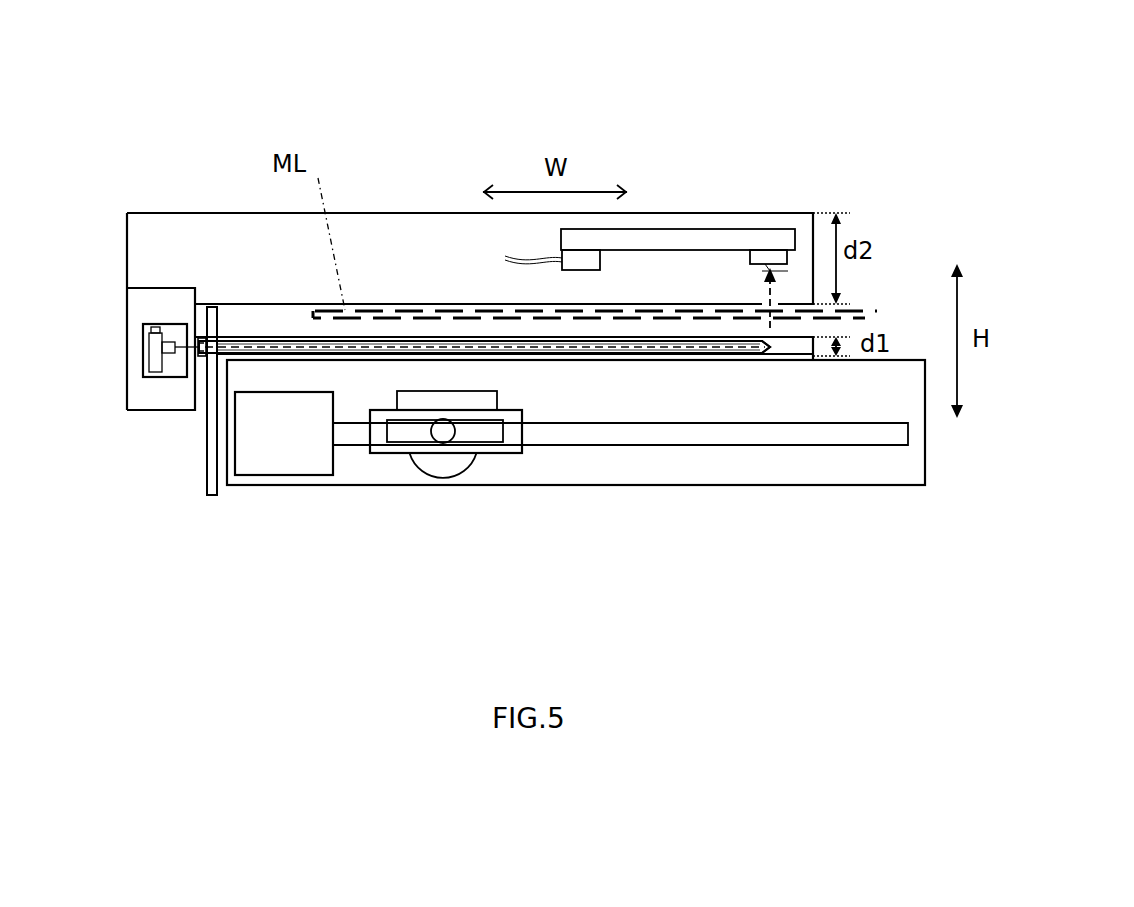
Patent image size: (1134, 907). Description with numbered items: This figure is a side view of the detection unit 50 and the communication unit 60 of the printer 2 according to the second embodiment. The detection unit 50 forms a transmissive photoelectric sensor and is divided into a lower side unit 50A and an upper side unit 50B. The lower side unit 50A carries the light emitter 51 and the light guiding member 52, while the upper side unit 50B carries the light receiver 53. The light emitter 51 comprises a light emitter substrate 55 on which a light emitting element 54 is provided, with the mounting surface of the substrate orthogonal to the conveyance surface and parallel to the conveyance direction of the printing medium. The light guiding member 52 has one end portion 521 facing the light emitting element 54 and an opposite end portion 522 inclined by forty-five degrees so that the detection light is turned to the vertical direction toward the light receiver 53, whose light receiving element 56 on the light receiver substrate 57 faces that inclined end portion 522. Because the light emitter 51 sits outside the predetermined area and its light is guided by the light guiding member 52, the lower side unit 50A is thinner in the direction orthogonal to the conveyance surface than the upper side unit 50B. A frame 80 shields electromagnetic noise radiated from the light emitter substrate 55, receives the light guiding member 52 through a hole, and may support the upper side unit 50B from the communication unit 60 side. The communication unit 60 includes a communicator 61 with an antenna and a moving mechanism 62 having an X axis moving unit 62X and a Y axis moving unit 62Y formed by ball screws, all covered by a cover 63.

The printer 2 is at (596, 103).
The detection unit 50 is at (428, 186).
The lower side unit 50A is at (812, 361).
The upper side unit 50B is at (380, 213).
The light emitter 51 is at (140, 360).
The light guiding member 52 is at (268, 340).
The end portion 521 is at (200, 357).
The end portion 522 is at (771, 353).
The light receiver 53 is at (655, 226).
The light emitting element 54 is at (168, 346).
The light emitter substrate 55 is at (152, 327).
The light receiving element 56 is at (783, 266).
The light receiver substrate 57 is at (770, 237).
The communication unit 60 is at (223, 509).
The communicator 61 is at (485, 402).
The moving mechanism 62 is at (536, 463).
The X axis moving unit 62X is at (443, 440).
The Y axis moving unit 62Y is at (707, 438).
The cover 63 is at (855, 486).
The frame 80 is at (212, 461).